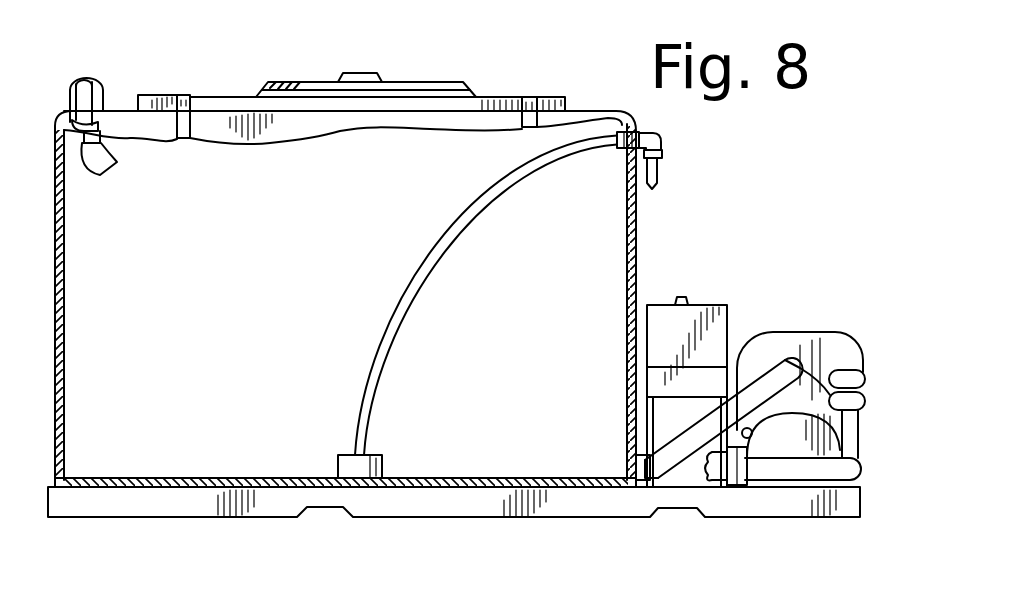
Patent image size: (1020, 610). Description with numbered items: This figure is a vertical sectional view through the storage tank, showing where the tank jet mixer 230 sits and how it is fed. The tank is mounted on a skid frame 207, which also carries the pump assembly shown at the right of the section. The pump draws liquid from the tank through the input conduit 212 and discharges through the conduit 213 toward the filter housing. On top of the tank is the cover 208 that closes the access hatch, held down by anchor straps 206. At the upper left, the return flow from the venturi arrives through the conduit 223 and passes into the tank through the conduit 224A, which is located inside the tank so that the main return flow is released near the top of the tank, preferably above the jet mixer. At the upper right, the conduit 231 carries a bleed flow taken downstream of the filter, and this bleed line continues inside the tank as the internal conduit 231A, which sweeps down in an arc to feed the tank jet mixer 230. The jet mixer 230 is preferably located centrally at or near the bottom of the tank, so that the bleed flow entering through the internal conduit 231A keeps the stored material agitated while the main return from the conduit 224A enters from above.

The anchor strap 206 is at (183, 94).
The skid frame 207 is at (575, 500).
The cover 208 is at (435, 91).
The input conduit 212 is at (780, 375).
The conduit 213 is at (818, 470).
The conduit 223 is at (92, 79).
The conduit 224A is at (101, 160).
The tank jet mixer 230 is at (338, 463).
The conduit 231 is at (663, 168).
The internal conduit 231A is at (420, 278).